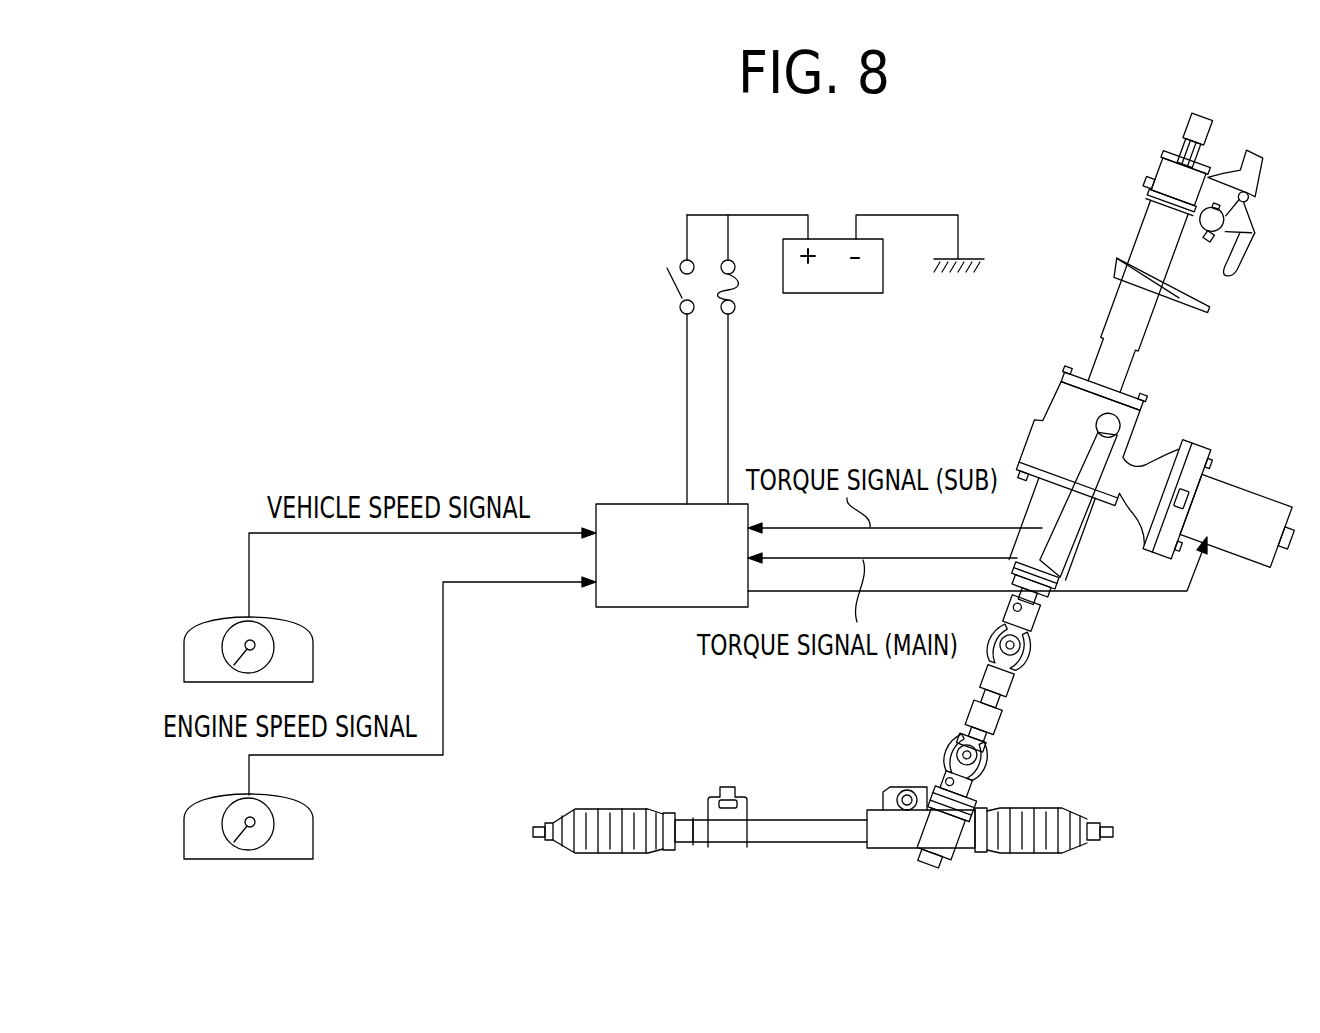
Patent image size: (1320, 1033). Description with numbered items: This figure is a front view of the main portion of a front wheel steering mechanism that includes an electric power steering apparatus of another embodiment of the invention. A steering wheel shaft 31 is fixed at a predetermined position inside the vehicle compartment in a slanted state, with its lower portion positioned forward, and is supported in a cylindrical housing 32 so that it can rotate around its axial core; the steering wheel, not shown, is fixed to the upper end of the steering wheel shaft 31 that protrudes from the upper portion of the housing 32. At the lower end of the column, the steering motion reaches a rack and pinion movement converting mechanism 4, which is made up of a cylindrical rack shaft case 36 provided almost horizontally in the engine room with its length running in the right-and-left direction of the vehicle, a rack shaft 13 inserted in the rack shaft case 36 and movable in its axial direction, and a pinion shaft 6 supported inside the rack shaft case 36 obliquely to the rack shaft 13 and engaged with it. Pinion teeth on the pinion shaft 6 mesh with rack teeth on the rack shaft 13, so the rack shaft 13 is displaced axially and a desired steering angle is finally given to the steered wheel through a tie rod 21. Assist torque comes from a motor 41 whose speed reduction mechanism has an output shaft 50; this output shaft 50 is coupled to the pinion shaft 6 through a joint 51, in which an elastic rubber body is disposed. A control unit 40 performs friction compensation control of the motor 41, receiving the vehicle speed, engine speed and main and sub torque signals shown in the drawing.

The steering wheel shaft 31 is at (1188, 122).
The cylindrical housing 32 is at (1144, 222).
The control unit 40 is at (620, 502).
The motor 41 is at (1252, 556).
The output shaft 50 is at (1035, 618).
The joint 51 is at (1005, 708).
The pinion shaft 6 is at (975, 785).
The rack and pinion movement converting mechanism 4 is at (935, 778).
The rack shaft 13 is at (797, 843).
The rack shaft case 36 is at (783, 819).
The tie rod 21 is at (1112, 823).